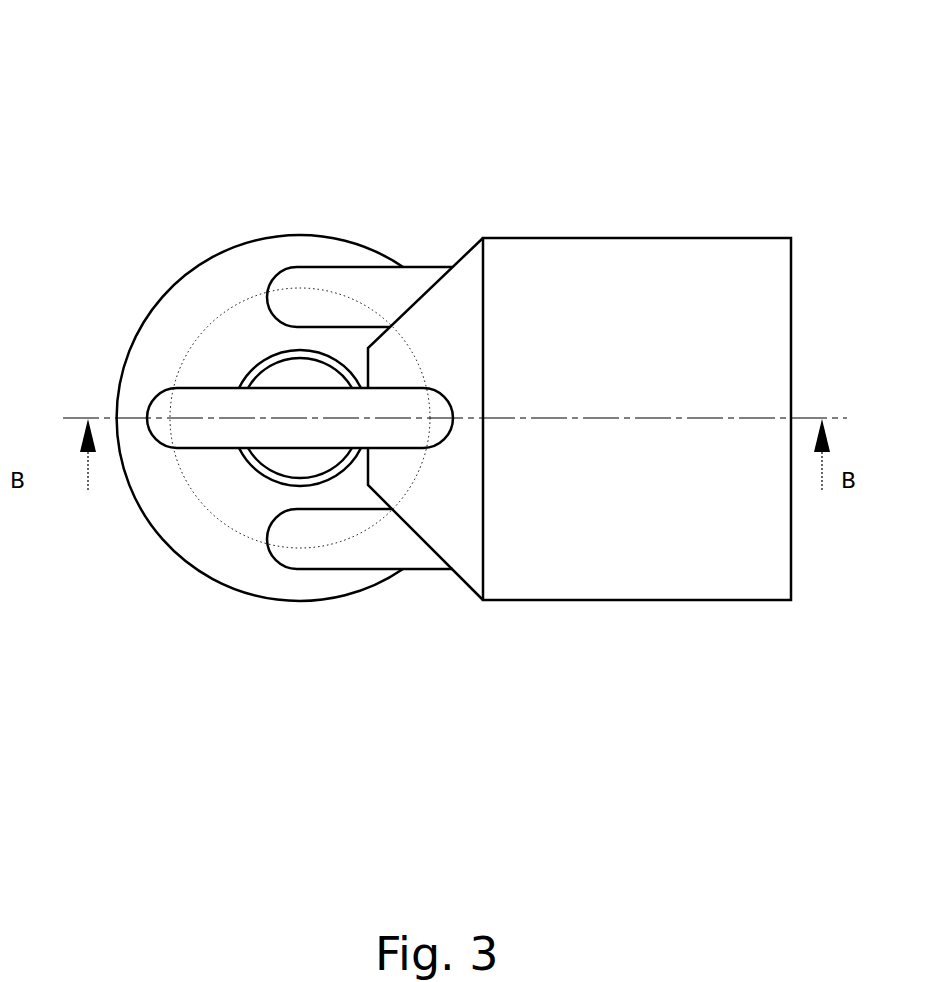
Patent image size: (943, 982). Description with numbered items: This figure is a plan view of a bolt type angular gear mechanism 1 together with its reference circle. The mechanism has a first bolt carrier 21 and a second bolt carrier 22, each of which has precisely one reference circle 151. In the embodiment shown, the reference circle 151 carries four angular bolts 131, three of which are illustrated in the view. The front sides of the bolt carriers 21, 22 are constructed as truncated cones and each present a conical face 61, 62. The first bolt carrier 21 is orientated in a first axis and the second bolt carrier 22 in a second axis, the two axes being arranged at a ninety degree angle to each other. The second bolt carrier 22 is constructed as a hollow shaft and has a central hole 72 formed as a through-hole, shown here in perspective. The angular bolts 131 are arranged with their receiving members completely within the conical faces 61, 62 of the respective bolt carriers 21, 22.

The bolt type angular gear mechanism 1 is at (707, 146).
The first bolt carrier 21 is at (557, 238).
The second bolt carrier 22 is at (197, 572).
The conical face 61 is at (470, 587).
The conical face 62 is at (172, 492).
The central hole 72 is at (273, 375).
The angular bolt 131 is at (353, 265).
The reference circle 151 is at (198, 342).